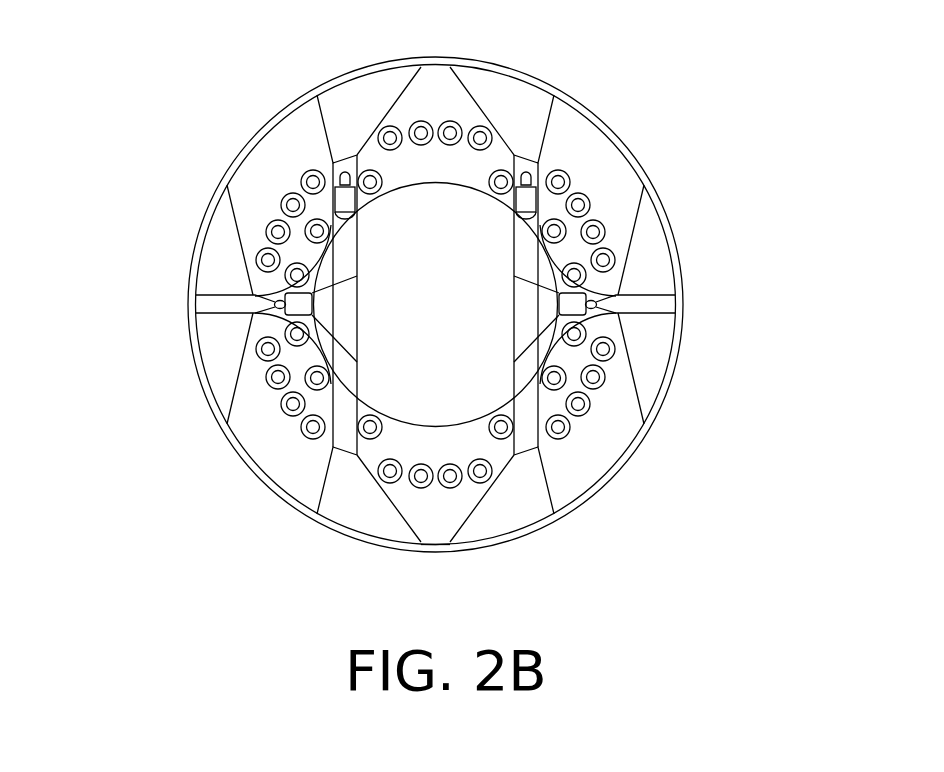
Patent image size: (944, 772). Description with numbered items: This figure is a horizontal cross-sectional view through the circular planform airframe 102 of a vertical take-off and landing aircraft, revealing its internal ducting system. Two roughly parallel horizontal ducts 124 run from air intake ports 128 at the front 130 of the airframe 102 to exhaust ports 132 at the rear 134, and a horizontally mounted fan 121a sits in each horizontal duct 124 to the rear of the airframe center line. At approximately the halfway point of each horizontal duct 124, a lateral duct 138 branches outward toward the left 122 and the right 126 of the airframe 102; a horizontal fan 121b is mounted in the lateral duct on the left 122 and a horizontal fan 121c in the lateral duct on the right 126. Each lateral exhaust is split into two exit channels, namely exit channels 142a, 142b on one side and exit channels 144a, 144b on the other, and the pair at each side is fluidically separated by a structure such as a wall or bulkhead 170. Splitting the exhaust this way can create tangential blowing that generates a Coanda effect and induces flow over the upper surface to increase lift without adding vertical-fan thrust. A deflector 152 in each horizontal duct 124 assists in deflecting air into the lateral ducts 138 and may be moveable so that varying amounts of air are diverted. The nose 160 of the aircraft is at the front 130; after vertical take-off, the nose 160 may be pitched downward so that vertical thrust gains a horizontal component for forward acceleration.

The airframe 102 is at (644, 60).
The horizontally mounted fan 121a is at (350, 210).
The horizontally mounted fan 121b is at (650, 275).
The horizontally mounted fan 121c is at (215, 277).
The left 122 is at (896, 313).
The horizontal duct 124 is at (353, 293).
The right 126 is at (83, 328).
The air intake port 128 is at (333, 540).
The front 130 is at (446, 596).
The exhaust port 132 is at (337, 70).
The rear 134 is at (450, 31).
The lateral duct 138 is at (353, 358).
The exit channel 142a is at (672, 230).
The exit channel 142b is at (660, 398).
The exit channel 144a is at (220, 250).
The exit channel 144b is at (213, 396).
The deflector 152 is at (340, 290).
The nose 160 is at (445, 553).
The wall or bulkhead 170 is at (272, 303).